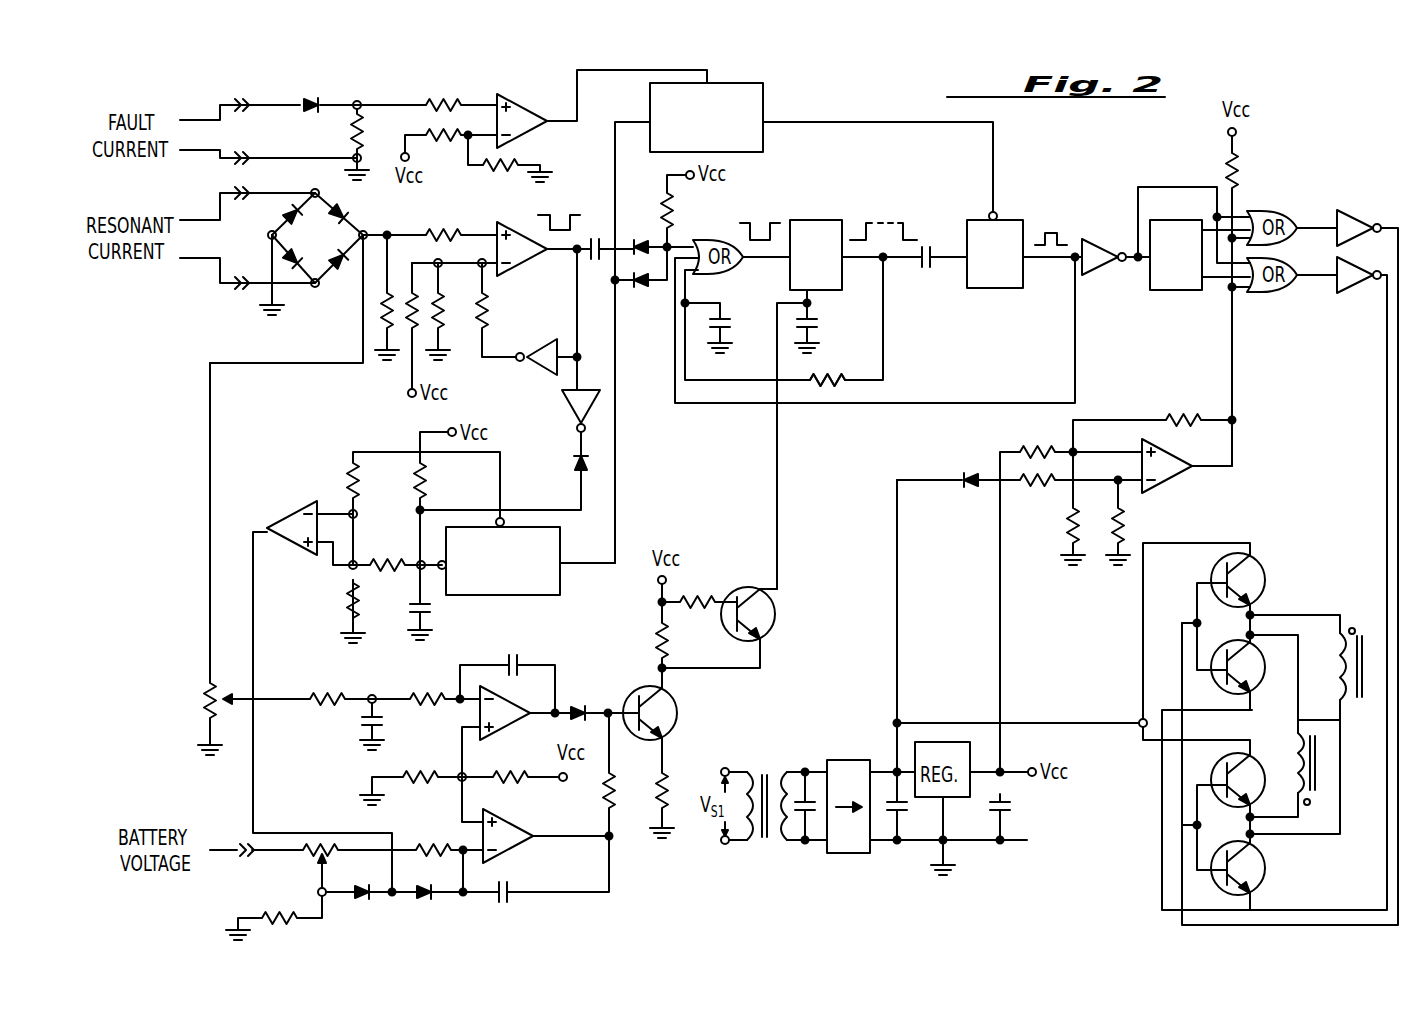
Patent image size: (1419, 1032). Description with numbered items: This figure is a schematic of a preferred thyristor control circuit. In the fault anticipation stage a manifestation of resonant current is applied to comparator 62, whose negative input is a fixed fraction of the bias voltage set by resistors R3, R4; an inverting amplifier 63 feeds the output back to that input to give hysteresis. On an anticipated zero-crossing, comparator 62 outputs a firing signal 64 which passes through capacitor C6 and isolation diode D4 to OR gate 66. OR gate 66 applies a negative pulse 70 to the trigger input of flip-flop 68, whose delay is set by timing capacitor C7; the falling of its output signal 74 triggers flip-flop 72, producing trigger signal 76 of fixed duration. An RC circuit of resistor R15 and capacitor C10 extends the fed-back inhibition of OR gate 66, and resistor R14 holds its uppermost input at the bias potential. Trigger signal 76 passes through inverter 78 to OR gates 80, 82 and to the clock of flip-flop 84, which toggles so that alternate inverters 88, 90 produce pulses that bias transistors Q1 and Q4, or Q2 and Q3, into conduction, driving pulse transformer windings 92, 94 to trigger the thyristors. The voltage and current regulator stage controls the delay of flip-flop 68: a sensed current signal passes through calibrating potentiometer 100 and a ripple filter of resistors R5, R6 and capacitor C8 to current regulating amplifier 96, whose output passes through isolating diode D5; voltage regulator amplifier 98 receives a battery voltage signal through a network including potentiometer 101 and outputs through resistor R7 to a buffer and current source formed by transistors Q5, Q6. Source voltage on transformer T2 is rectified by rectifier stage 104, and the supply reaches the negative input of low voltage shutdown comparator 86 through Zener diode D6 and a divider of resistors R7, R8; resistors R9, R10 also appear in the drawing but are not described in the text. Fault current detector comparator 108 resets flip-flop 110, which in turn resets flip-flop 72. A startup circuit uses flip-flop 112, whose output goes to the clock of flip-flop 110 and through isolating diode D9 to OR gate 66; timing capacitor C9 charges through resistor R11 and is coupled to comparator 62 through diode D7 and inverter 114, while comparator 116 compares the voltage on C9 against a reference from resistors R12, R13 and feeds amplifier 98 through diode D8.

The comparator 108 is at (520, 113).
The flip-flop 110 is at (757, 100).
The comparator 62 is at (508, 222).
The firing signal 64 is at (557, 213).
The inverting amplifier 63 is at (527, 366).
The inverter 114 is at (565, 406).
The OR gate 66 is at (711, 241).
The flip-flop 68 is at (815, 223).
The negative pulse 70 is at (757, 218).
The flip-flop 72 is at (1010, 223).
The signal 74 is at (900, 218).
The trigger signal 76 is at (1058, 229).
The inverter 78 is at (1100, 238).
The OR gate 80 is at (1271, 213).
The OR gate 82 is at (1266, 293).
The flip-flop 84 is at (1162, 290).
The comparator 86 is at (1200, 473).
The inverter 88 is at (1368, 210).
The inverter 90 is at (1362, 292).
The pulse transformer winding 92 is at (1338, 662).
The pulse transformer winding 94 is at (1315, 772).
The current regulating operational amplifier 96 is at (510, 716).
The voltage regulator amplifier 98 is at (518, 822).
The calibrating potentiometer 100 is at (206, 692).
The calibrating potentiometer 101 is at (306, 861).
The rectifier stage 104 is at (850, 775).
The flip-flop 112 is at (541, 586).
The comparator 116 is at (291, 521).
The resistor R3 is at (396, 316).
The resistor R4 is at (442, 310).
The resistor R5 is at (318, 691).
The resistor R6 is at (410, 692).
The resistor R7 is at (1029, 490).
The resistor R8 is at (1128, 516).
The resistor R9 is at (1038, 447).
The resistor R10 is at (1068, 532).
The resistor R11 is at (430, 480).
The resistor R12 is at (348, 478).
The resistor R13 is at (341, 593).
The resistor R14 is at (658, 196).
The resistor R15 is at (830, 378).
The capacitor C6 is at (593, 262).
The timing capacitor C7 is at (818, 320).
The capacitor C8 is at (360, 718).
The timing capacitor C9 is at (430, 612).
The capacitor C10 is at (731, 320).
The isolation diode D4 is at (637, 233).
The isolating diode D5 is at (584, 701).
The Zener diode D6 is at (970, 470).
The diode D7 is at (573, 462).
The diode D8 is at (426, 899).
The isolating diode D9 is at (643, 296).
The transistor Q1 is at (1262, 573).
The transistor Q2 is at (1256, 770).
The transistor Q3 is at (1255, 676).
The transistor Q4 is at (1256, 872).
The transistor Q5 is at (678, 711).
The transistor Q6 is at (766, 648).
The transformer T2 is at (767, 791).